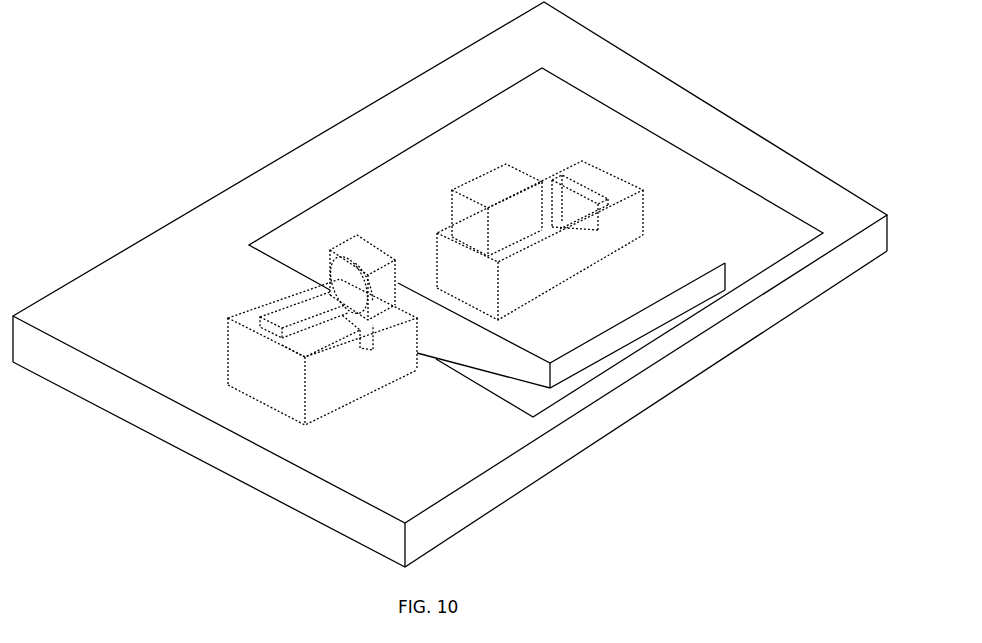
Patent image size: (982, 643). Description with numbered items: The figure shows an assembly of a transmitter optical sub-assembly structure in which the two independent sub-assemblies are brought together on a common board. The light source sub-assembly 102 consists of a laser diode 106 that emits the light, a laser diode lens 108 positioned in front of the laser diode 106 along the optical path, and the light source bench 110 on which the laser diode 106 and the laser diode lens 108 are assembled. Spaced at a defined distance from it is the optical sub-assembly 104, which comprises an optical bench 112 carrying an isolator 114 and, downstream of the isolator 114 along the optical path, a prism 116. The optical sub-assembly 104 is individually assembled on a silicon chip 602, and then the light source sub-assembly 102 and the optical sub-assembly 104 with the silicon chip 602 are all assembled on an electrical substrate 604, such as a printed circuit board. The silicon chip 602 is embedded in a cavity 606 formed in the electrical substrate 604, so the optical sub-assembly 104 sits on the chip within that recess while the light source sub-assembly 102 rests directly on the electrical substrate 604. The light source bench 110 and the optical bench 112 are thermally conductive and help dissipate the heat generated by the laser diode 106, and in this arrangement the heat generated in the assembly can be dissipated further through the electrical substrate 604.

The light source sub-assembly 102 is at (215, 315).
The optical sub-assembly 104 is at (624, 183).
The laser diode 106 is at (292, 313).
The laser diode lens 108 is at (355, 282).
The light source bench 110 is at (267, 378).
The optical bench 112 is at (602, 235).
The isolator 114 is at (488, 195).
The prism 116 is at (582, 195).
The silicon chip 602 is at (620, 307).
The electrical substrate 604 is at (492, 475).
The cavity 606 is at (737, 182).